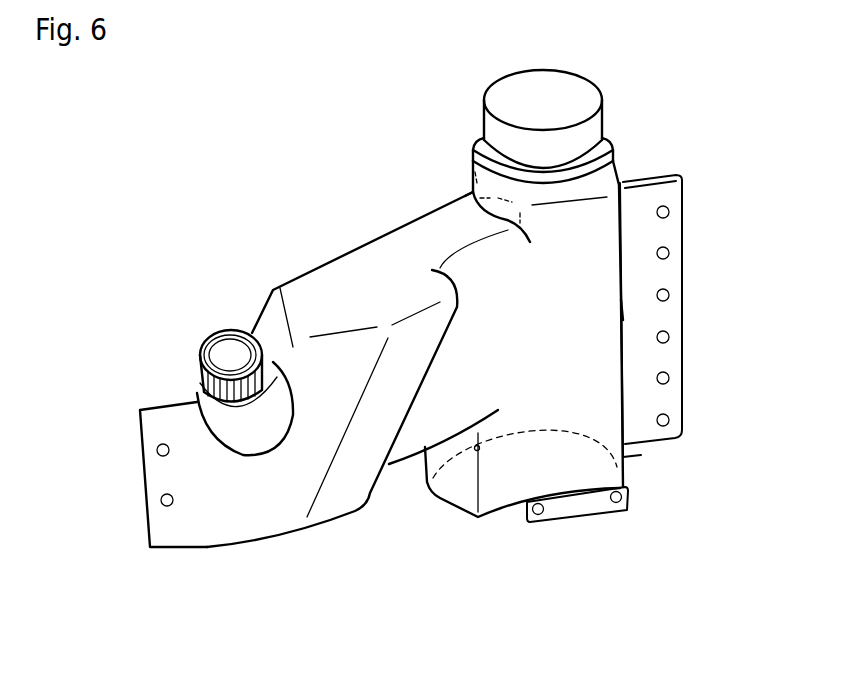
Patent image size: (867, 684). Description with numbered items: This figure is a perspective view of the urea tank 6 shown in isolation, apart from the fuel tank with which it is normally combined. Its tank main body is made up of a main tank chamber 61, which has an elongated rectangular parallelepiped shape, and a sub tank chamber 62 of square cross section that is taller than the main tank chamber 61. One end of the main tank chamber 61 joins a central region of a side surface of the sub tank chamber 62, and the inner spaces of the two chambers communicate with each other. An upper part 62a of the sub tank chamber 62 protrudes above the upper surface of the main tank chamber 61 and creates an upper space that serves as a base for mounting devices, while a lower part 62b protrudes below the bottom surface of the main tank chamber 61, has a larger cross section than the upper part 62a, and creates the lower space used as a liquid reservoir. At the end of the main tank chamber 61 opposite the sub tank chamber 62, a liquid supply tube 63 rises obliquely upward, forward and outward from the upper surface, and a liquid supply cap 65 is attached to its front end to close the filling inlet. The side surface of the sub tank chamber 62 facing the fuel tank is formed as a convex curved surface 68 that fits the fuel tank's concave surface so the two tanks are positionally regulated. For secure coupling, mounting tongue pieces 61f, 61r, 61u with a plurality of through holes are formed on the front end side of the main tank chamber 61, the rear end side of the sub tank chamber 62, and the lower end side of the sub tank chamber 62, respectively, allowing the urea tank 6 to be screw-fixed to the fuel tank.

The urea tank 6 is at (315, 197).
The main tank chamber 61 is at (384, 502).
The mounting tongue piece 61f is at (155, 482).
The mounting tongue piece 61r is at (670, 228).
The mounting tongue piece 61u is at (597, 503).
The sub tank chamber 62 is at (638, 466).
The upper part of the sub tank chamber 62a is at (470, 194).
The lower part of the sub tank chamber 62b is at (550, 478).
The liquid supply tube 63 is at (197, 342).
The liquid supply cap 65 is at (225, 345).
The curved surface 68 is at (562, 338).